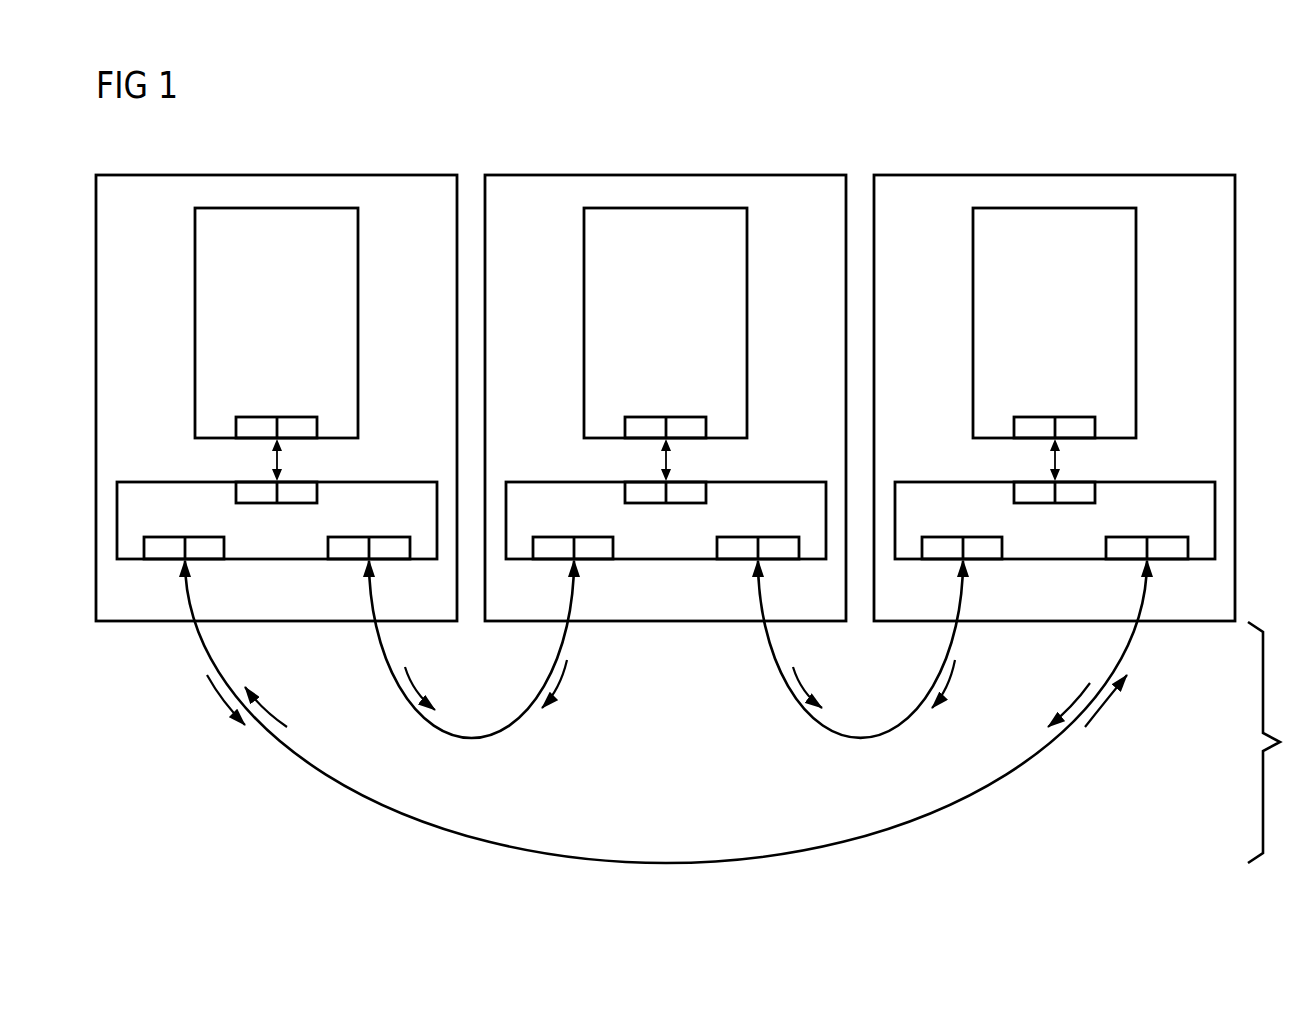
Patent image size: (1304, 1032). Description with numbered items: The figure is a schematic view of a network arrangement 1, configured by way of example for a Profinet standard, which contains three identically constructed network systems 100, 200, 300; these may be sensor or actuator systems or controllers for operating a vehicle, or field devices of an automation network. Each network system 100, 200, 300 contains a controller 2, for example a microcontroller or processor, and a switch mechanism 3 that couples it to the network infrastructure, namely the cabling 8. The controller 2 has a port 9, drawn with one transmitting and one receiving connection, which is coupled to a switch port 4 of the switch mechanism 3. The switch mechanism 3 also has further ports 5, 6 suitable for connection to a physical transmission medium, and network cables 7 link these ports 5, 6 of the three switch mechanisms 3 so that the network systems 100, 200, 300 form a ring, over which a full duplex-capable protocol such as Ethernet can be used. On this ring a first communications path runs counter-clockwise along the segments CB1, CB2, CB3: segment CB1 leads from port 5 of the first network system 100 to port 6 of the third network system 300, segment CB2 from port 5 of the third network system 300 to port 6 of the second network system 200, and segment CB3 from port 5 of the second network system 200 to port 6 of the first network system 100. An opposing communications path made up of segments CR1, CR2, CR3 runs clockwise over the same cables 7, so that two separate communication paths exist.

The network arrangement 1 is at (1244, 138).
The controller 2 is at (288, 175).
The switch mechanism 3 is at (410, 481).
The switch port 4 is at (236, 490).
The port 5 is at (153, 543).
The port 6 is at (398, 543).
The network cable 7 is at (468, 740).
The cabling 8 is at (1273, 742).
The port 9 is at (317, 430).
The network system 100 is at (390, 175).
The network system 200 is at (779, 175).
The network system 300 is at (1168, 175).
The segment CB1 is at (221, 697).
The segment CB2 is at (950, 680).
The segment CB3 is at (563, 680).
The segment CR1 is at (412, 680).
The segment CR2 is at (800, 680).
The segment CR3 is at (277, 707).